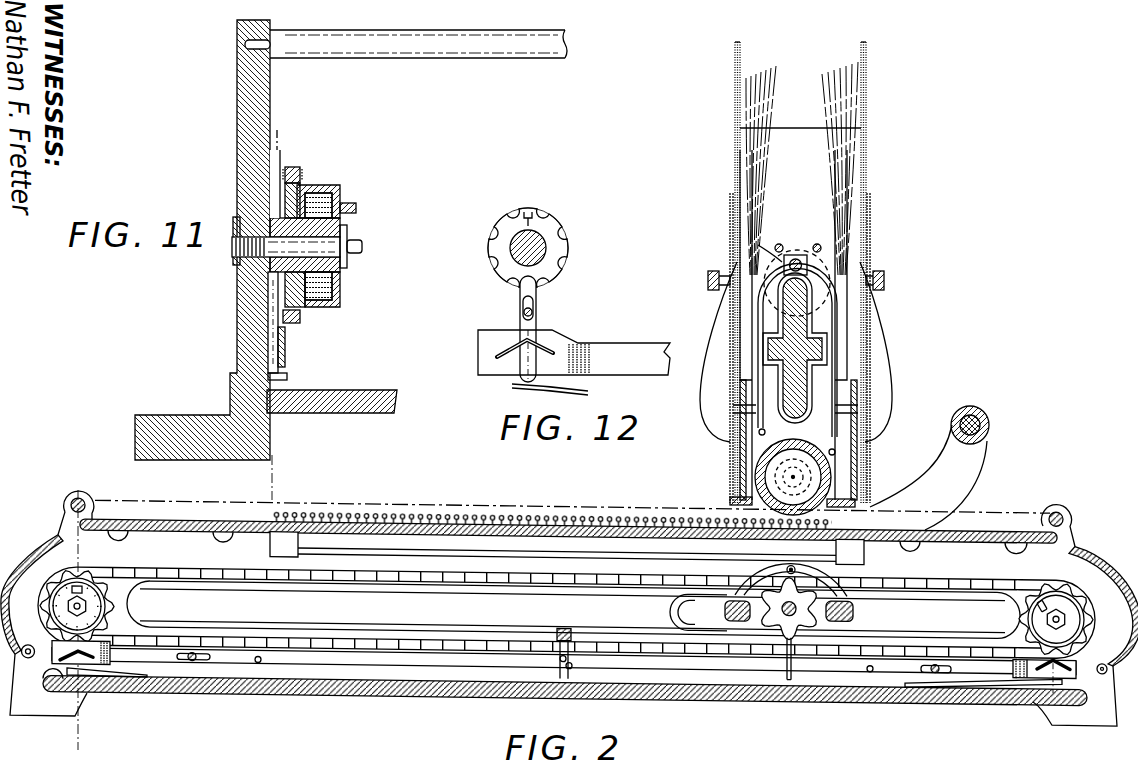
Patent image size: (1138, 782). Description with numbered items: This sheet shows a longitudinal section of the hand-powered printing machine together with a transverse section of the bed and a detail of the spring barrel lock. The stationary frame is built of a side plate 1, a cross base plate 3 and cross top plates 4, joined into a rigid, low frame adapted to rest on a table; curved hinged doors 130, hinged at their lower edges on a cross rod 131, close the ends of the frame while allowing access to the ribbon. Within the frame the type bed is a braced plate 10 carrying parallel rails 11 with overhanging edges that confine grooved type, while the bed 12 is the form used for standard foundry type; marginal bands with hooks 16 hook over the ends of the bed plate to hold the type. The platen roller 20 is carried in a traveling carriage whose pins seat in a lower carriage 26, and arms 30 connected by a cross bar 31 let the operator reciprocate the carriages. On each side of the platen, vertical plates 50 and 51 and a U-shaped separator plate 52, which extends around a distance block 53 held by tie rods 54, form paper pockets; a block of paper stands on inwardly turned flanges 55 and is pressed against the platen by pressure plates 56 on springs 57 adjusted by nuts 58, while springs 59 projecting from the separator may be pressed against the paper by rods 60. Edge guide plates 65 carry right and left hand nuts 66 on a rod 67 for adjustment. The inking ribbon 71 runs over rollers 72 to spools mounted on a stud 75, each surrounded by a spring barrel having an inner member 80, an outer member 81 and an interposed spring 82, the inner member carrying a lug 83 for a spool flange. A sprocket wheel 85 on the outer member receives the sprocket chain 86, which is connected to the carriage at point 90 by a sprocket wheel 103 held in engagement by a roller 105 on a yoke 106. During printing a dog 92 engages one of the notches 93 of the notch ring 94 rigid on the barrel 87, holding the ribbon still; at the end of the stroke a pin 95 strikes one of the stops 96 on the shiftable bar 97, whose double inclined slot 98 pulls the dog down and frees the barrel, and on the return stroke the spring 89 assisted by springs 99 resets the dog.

In FIG. 11, the side plate 1 is at (263, 80).
In FIG. 2, the side plate 1 is at (563, 610).
In FIG. 11, the cross base plate 3 is at (380, 413).
In FIG. 2, the cross base plate 3 is at (700, 691).
In FIG. 2, the cross top plate 4 is at (1003, 524).
In FIG. 2, the braced plate 10 is at (555, 537).
In FIG. 2, the rails 11 is at (627, 500).
In FIG. 11, the type bed 12 is at (283, 165).
In FIG. 2, the type bed 12 is at (274, 477).
In FIG. 2, the hooks 16 is at (880, 551).
In FIG. 2, the roller 20 is at (838, 473).
In FIG. 2, the lower carriage 26 is at (853, 600).
In FIG. 2, the arms 30 is at (928, 477).
In FIG. 2, the cross bar 31 is at (989, 430).
In FIG. 2, the vertical plate 50 is at (735, 141).
In FIG. 2, the vertical plate 51 is at (866, 108).
In FIG. 2, the U-shaped plate 52 is at (788, 270).
In FIG. 2, the distance block 53 is at (802, 323).
In FIG. 2, the tie rods 54 is at (832, 452).
In FIG. 2, the flanges 55 is at (866, 491).
In FIG. 2, the pressure plates 56 is at (735, 468).
In FIG. 2, the springs 57 is at (890, 374).
In FIG. 2, the nuts 58 is at (877, 292).
In FIG. 2, the springs 59 is at (852, 412).
In FIG. 2, the rods 60 is at (837, 452).
In FIG. 2, the side plates 65 is at (800, 168).
In FIG. 2, the right and left hand nuts 66 is at (799, 253).
In FIG. 2, the rod 67 is at (763, 242).
In FIG. 2, the inking ribbon 71 is at (206, 497).
In FIG. 11, the rollers 72 is at (412, 47).
In FIG. 2, the rollers 72 is at (1087, 501).
In FIG. 11, the stud 75 is at (362, 244).
In FIG. 12, the stud 75 is at (522, 208).
In FIG. 2, the stud 75 is at (1100, 607).
In FIG. 11, the inner member 80 is at (343, 194).
In FIG. 11, the outer member 81 is at (320, 185).
In FIG. 11, the spring 82 is at (332, 190).
In FIG. 11, the lug 83 is at (356, 207).
In FIG. 11, the sprocket wheel 85 is at (293, 168).
In FIG. 2, the sprocket wheel 85 is at (1020, 603).
In FIG. 11, the sprocket chain 86 is at (313, 320).
In FIG. 2, the sprocket chain 86 is at (433, 579).
In FIG. 11, the barrel 87 is at (262, 256).
In FIG. 12, the barrel 87 is at (532, 240).
In FIG. 2, the spring 89 is at (577, 672).
In FIG. 2, the connection point 90 is at (800, 564).
In FIG. 11, the dog 92 is at (270, 300).
In FIG. 12, the dog 92 is at (537, 297).
In FIG. 2, the dog 92 is at (100, 620).
In FIG. 12, the notches 93 is at (557, 274).
In FIG. 11, the notch ring 94 is at (265, 203).
In FIG. 12, the notch ring 94 is at (568, 244).
In FIG. 2, the notch ring 94 is at (55, 593).
In FIG. 2, the pin 95 is at (790, 672).
In FIG. 2, the stops 96 is at (872, 662).
In FIG. 11, the shiftable bar 97 is at (285, 347).
In FIG. 12, the shiftable bar 97 is at (574, 352).
In FIG. 2, the shiftable bar 97 is at (433, 662).
In FIG. 12, the double inclined slot 98 is at (554, 348).
In FIG. 2, the double inclined slot 98 is at (1072, 650).
In FIG. 11, the springs 99 is at (288, 378).
In FIG. 12, the springs 99 is at (588, 390).
In FIG. 2, the springs 99 is at (1013, 702).
In FIG. 2, the sprocket wheel 103 is at (789, 608).
In FIG. 2, the roller 105 is at (800, 549).
In FIG. 2, the yoke 106 is at (784, 580).
In FIG. 2, the curved hinged door 130 is at (1115, 562).
In FIG. 2, the cross rod 131 is at (31, 643).